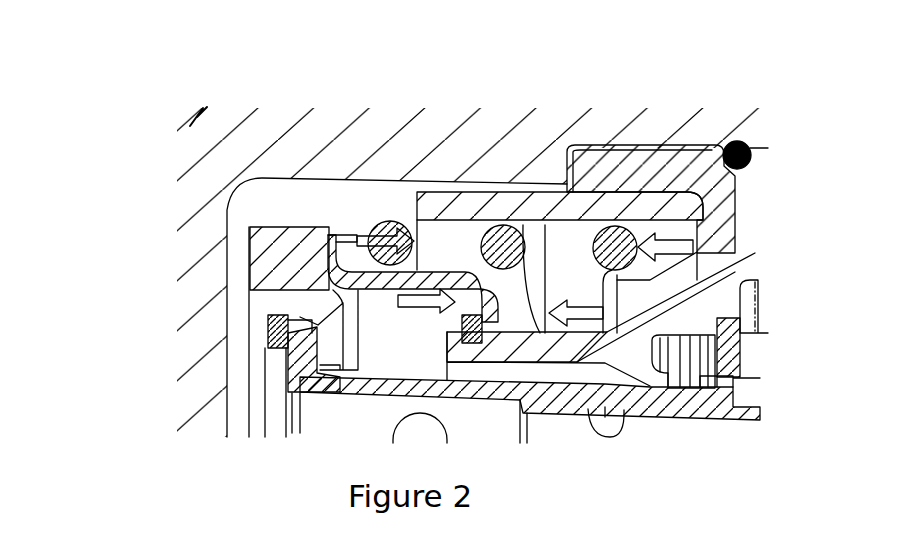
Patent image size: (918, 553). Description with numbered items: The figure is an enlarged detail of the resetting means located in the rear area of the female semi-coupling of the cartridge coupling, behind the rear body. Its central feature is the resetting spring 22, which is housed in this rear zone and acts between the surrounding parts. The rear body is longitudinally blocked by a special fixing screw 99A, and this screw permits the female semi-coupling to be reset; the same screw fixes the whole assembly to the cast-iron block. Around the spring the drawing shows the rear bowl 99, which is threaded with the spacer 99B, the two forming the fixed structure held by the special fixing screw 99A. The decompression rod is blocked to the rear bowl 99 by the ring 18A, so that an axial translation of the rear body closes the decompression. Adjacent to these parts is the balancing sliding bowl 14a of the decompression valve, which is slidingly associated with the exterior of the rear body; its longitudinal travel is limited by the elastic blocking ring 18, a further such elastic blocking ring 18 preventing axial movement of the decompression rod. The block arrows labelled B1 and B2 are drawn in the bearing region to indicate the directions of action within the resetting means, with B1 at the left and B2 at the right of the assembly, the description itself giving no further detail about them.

The rear bowl 99 is at (273, 247).
The special fixing screw 99A is at (735, 134).
The spacer 99B is at (640, 168).
The resetting spring 22 is at (506, 226).
The balancing sliding bowl 14a is at (472, 262).
The elastic blocking ring 18 is at (475, 312).
The ring 18A is at (268, 331).
The force direction B1 is at (378, 220).
The force direction B2 is at (700, 217).